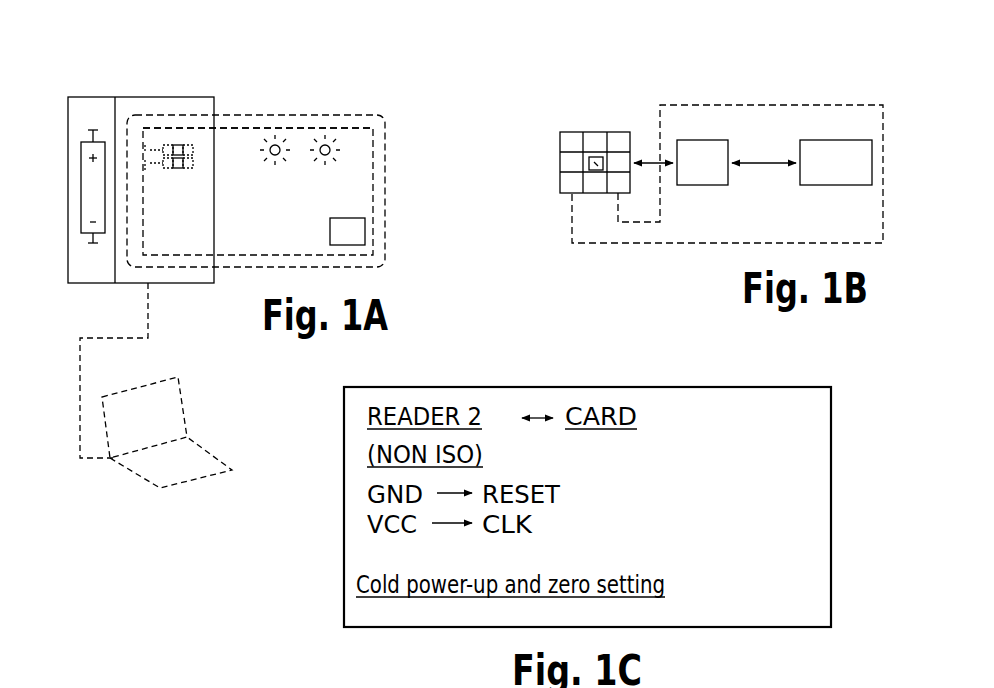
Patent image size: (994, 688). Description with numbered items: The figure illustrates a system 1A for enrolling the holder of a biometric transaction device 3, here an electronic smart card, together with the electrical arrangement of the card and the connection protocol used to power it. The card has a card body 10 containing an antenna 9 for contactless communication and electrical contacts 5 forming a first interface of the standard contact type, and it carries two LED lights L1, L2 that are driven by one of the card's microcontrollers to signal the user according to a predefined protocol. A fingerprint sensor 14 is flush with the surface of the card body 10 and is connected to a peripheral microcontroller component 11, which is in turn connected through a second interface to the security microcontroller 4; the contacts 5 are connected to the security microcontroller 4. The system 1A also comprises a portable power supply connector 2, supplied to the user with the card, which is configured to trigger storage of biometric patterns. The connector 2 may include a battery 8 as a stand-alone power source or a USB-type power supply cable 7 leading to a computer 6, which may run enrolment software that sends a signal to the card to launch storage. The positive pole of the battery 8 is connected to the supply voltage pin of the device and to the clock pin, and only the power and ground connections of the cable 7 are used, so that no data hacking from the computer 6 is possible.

In FIG. 1A, the system for enrolling a holder of a biometric transaction device 1A is at (408, 87).
In FIG. 1A, the portable power supply connector 2 is at (130, 272).
In FIG. 1A, the biometric transaction device 3 is at (364, 160).
In FIG. 1B, the security microcontroller 4 is at (595, 157).
In FIG. 1A, the electrical contacts / first interface 5 is at (178, 147).
In FIG. 1B, the electrical contacts / first interface 5 is at (560, 165).
In FIG. 1A, the computer 6 is at (187, 408).
In FIG. 1A, the power supply cable 7 is at (80, 378).
In FIG. 1A, the battery 8 is at (81, 185).
In FIG. 1A, the antenna 9 is at (362, 128).
In FIG. 1B, the antenna 9 is at (705, 244).
In FIG. 1A, the card body 10 is at (394, 190).
In FIG. 1B, the peripheral MCU component 11 is at (700, 145).
In FIG. 1A, the fingerprint sensor 14 is at (357, 230).
In FIG. 1B, the fingerprint sensor 14 is at (858, 163).
In FIG. 1A, the first LED light L1 is at (274, 145).
In FIG. 1A, the second LED light L2 is at (329, 148).